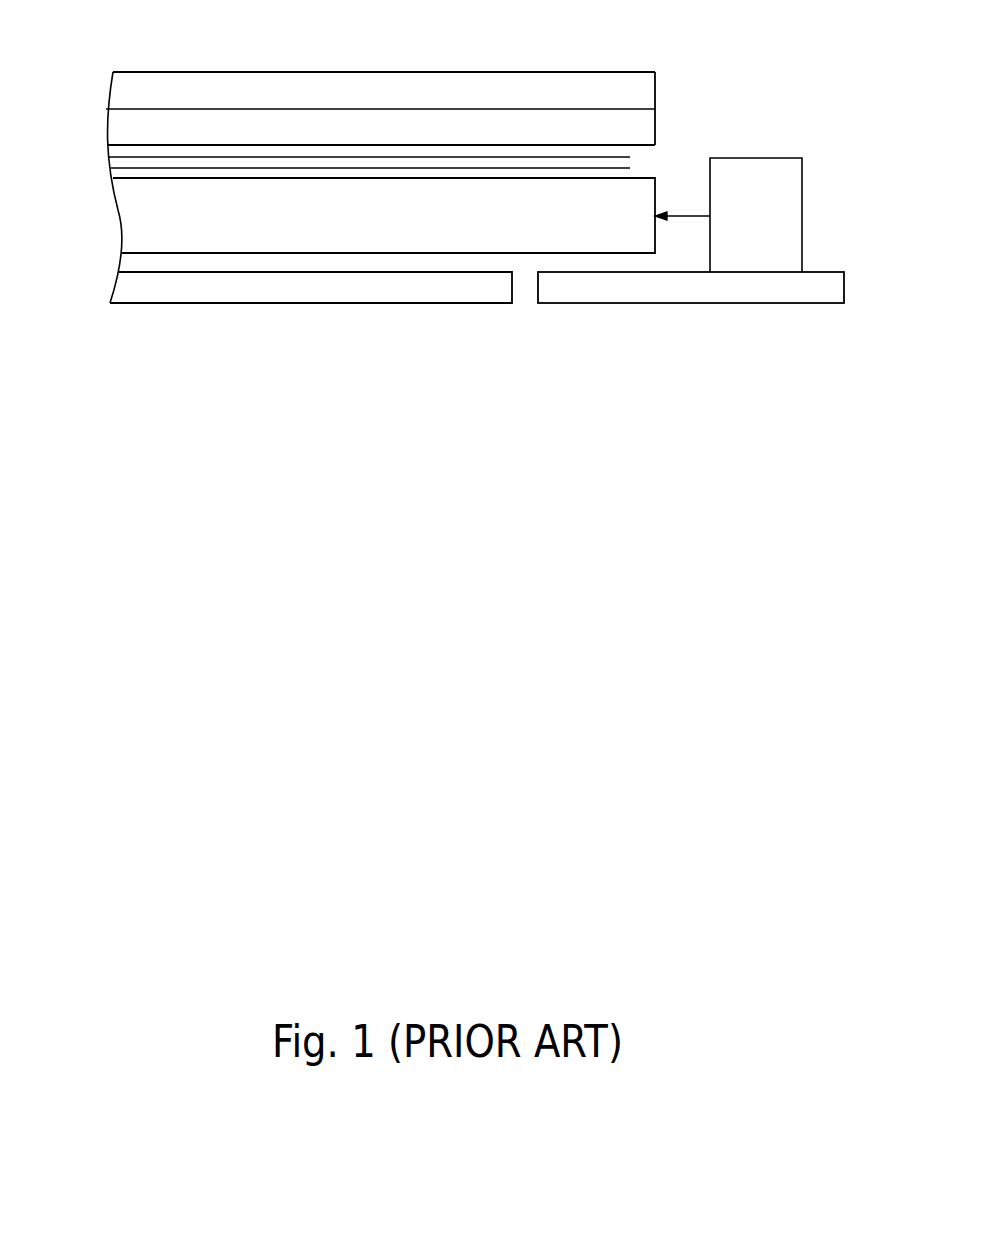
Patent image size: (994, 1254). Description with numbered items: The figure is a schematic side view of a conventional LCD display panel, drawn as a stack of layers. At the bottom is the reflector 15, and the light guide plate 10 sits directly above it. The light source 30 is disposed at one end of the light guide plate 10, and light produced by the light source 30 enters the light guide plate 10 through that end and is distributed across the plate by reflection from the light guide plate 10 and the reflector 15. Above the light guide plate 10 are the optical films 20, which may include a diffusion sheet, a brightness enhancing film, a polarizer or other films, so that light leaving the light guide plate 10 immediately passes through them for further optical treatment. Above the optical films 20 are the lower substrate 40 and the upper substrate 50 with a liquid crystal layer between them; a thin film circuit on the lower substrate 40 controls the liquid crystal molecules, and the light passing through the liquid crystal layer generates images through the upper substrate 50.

The light guide plate 10 is at (137, 210).
The reflector 15 is at (128, 287).
The optical films 20 is at (135, 168).
The light source 30 is at (785, 210).
The lower substrate 40 is at (118, 130).
The upper substrate 50 is at (128, 92).